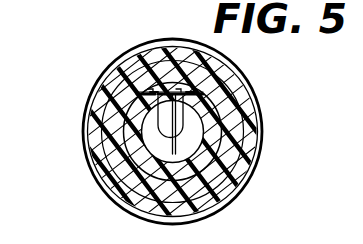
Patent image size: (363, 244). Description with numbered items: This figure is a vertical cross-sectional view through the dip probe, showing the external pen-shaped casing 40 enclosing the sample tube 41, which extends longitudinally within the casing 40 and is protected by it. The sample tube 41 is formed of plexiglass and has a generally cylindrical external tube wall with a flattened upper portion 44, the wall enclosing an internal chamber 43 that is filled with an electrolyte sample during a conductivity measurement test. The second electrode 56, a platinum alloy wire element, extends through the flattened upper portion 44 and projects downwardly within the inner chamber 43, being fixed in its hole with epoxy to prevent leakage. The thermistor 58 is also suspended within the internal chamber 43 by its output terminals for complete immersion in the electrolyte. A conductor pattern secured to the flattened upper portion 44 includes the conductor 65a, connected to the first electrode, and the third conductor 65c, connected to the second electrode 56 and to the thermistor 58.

The external pen-shaped casing 40 is at (258, 118).
The sample tube 41 is at (220, 144).
The internal chamber 43 is at (214, 158).
The flattened upper portion 44 is at (194, 101).
The second electrode 56 is at (170, 148).
The thermistor 58 is at (160, 123).
The conductor path 65a is at (157, 92).
The third conductor 65c is at (191, 92).